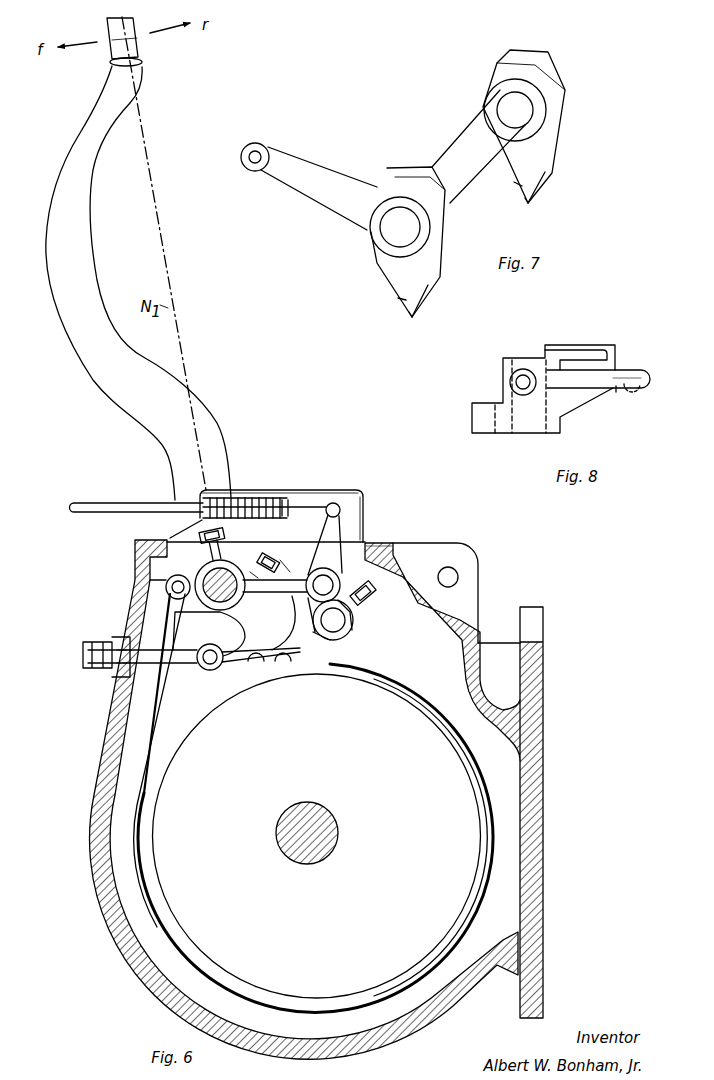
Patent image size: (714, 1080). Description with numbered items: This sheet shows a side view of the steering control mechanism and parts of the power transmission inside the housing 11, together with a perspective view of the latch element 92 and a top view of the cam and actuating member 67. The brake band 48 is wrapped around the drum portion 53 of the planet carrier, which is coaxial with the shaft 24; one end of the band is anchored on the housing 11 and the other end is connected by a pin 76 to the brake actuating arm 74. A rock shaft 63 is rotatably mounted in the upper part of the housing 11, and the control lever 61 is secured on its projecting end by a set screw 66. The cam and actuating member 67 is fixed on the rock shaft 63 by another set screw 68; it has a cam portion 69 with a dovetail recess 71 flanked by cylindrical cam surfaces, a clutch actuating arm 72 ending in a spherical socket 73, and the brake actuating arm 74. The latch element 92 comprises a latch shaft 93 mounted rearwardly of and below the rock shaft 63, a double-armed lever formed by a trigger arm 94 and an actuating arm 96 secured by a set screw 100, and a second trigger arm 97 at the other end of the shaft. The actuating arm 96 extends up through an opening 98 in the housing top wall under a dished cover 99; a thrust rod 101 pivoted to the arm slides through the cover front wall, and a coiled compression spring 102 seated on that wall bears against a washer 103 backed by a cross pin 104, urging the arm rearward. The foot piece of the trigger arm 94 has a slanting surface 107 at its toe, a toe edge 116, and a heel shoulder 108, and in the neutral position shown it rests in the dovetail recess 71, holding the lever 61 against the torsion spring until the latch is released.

In FIG. 6, the housing 11 is at (118, 712).
In FIG. 6, the shaft 24 is at (340, 841).
In FIG. 6, the brake band 48 is at (160, 672).
In FIG. 6, the drum portion 53 is at (188, 687).
In FIG. 6, the control lever 61 is at (98, 381).
In FIG. 6, the rock shaft 63 is at (222, 600).
In FIG. 6, the set screw 66 is at (278, 560).
In FIG. 6, the cam and actuating member 67 is at (252, 626).
In FIG. 8, the cam and actuating member 67 is at (477, 387).
In FIG. 6, the set screw 68 is at (228, 534).
In FIG. 6, the cam portion 69 is at (248, 652).
In FIG. 8, the cam portion 69 is at (594, 350).
In FIG. 6, the dovetail recess 71 is at (292, 635).
In FIG. 6, the clutch actuating arm 72 is at (262, 596).
In FIG. 8, the clutch actuating arm 72 is at (626, 372).
In FIG. 6, the spherical socket 73 is at (335, 585).
In FIG. 8, the spherical socket 73 is at (632, 394).
In FIG. 6, the brake actuating arm 74 is at (150, 580).
In FIG. 8, the brake actuating arm 74 is at (503, 428).
In FIG. 6, the pin 76 is at (178, 575).
In FIG. 6, the latch element 92 is at (354, 641).
In FIG. 7, the latch element 92 is at (458, 121).
In FIG. 6, the latch shaft 93 is at (342, 636).
In FIG. 7, the latch shaft 93 is at (472, 183).
In FIG. 6, the trigger arm 94 is at (352, 618).
In FIG. 7, the trigger arm 94 is at (394, 266).
In FIG. 6, the actuating arm 96 is at (338, 545).
In FIG. 7, the actuating arm 96 is at (325, 208).
In FIG. 7, the trigger arm 97 is at (558, 150).
In FIG. 6, the opening 98 is at (368, 540).
In FIG. 6, the dished cover 99 is at (364, 496).
In FIG. 6, the set screw 100 is at (375, 600).
In FIG. 6, the thrust rod 101 is at (78, 512).
In FIG. 6, the coiled compression spring 102 is at (258, 497).
In FIG. 6, the washer 103 is at (290, 503).
In FIG. 6, the cross pin 104 is at (286, 518).
In FIG. 7, the slanting surface 107 is at (432, 302).
In FIG. 7, the shoulder 108 is at (404, 299).
In FIG. 7, the toe edge 116 is at (410, 318).